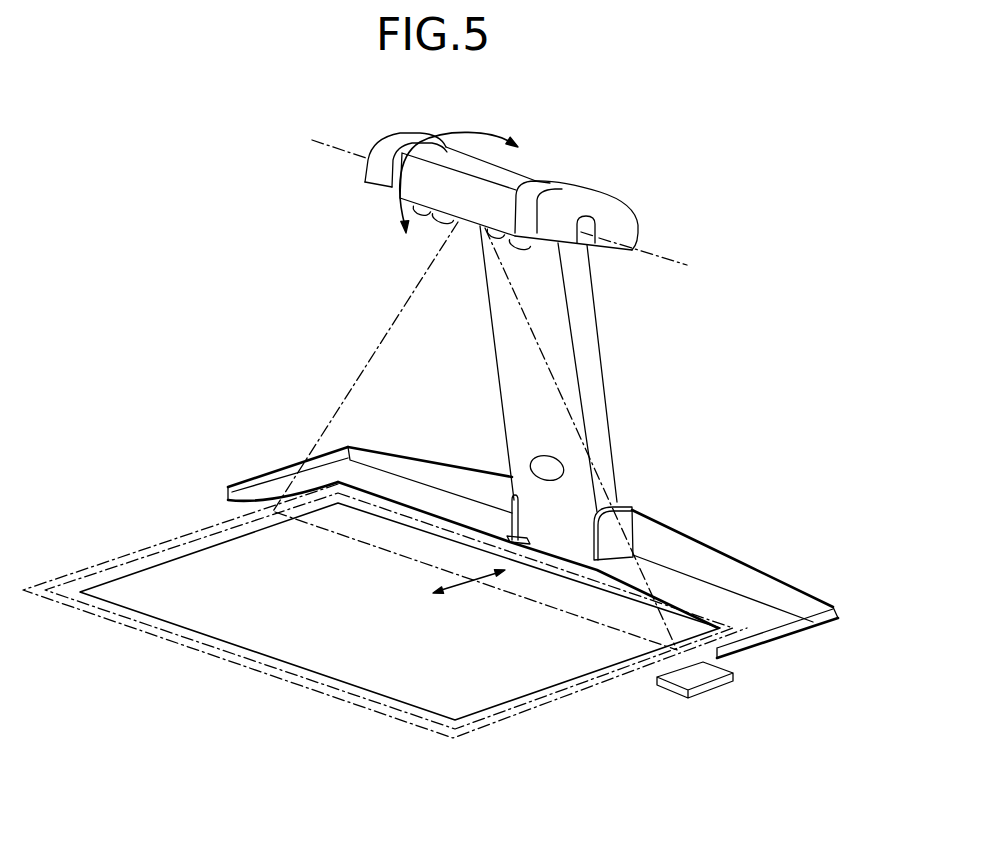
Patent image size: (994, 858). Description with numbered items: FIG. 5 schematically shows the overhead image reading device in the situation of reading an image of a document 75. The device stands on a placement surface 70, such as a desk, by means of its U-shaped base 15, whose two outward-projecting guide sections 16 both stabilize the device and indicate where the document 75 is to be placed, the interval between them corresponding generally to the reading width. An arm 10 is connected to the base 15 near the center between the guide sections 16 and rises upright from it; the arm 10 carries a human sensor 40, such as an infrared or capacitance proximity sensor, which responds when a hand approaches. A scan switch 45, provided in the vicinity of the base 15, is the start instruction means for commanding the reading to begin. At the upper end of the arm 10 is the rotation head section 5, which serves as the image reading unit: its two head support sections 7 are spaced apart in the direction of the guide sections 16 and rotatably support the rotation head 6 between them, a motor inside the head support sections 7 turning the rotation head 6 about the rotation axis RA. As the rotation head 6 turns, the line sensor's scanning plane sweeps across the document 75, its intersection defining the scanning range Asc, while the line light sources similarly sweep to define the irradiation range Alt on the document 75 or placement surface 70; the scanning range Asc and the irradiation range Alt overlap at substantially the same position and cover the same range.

The rotation head section 5 is at (501, 167).
The rotation head 6 is at (520, 170).
The head support sections 7 is at (400, 133).
The rotation axis RA is at (658, 252).
The arm 10 is at (598, 320).
The human sensor 40 is at (532, 468).
The base 15 is at (733, 557).
The guide sections 16 is at (253, 477).
The document 75 is at (512, 702).
The scanning range Asc is at (290, 673).
The irradiation range Alt is at (340, 697).
The placement surface 70 is at (592, 708).
The scan switch 45 is at (712, 688).